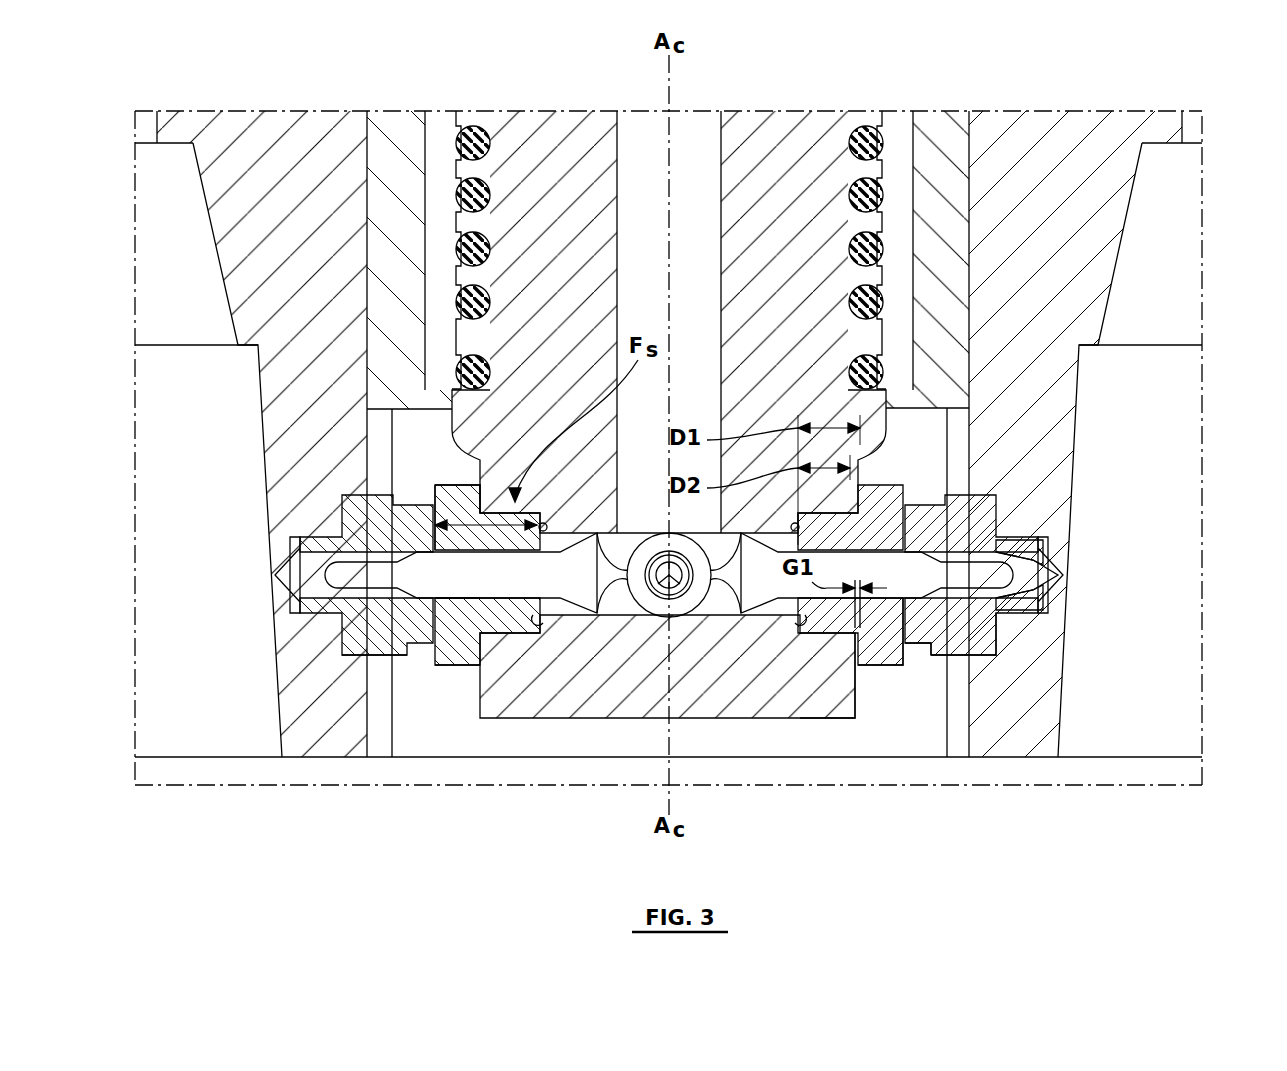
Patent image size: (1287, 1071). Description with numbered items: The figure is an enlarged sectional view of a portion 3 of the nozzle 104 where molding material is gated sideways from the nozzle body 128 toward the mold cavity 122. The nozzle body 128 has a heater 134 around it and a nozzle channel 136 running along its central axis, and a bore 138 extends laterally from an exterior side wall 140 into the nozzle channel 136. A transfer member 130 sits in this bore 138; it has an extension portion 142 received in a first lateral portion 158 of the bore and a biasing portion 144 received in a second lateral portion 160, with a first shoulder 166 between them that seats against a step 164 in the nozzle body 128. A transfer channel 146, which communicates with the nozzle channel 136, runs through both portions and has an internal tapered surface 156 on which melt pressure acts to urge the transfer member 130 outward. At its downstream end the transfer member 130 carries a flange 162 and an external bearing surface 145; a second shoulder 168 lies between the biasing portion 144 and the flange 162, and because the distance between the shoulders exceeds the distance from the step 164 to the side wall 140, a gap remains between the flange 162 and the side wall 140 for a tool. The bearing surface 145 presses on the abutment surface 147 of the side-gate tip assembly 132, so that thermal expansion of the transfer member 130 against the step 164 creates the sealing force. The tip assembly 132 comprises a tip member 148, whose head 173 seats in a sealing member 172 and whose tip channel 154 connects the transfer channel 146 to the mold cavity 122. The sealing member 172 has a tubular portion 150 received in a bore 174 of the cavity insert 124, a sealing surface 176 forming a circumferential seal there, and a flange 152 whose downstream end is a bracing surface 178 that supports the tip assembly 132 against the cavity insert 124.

The portion 3 is at (832, 111).
The nozzle 104 is at (1000, 164).
The mold cavity 122 is at (210, 597).
The cavity insert 124 is at (312, 718).
The nozzle body 128 is at (747, 698).
The transfer member 130 is at (505, 513).
The side-gate tip assembly 132 is at (1016, 481).
The heater 134 is at (878, 197).
The nozzle channel 136 is at (692, 157).
The bore 138 is at (716, 795).
The exterior side wall 140 is at (452, 391).
The extension portion 142 is at (597, 615).
The biasing portion 144 is at (483, 612).
The external bearing surface 145 is at (978, 492).
The transfer channel 146 is at (522, 633).
The abutment surface 147 is at (352, 650).
The tip member 148 is at (1058, 576).
The tubular portion 150 is at (1012, 610).
The flange 152 is at (945, 633).
The tip channel 154 is at (1005, 615).
The internal tapered surface 156 is at (657, 617).
The first lateral portion 158 is at (802, 623).
The second lateral portion 160 is at (857, 698).
The flange 162 is at (900, 605).
The step 164 is at (540, 615).
The first shoulder 166 is at (797, 525).
The second shoulder 168 is at (480, 512).
The sealing member 172 is at (305, 625).
The tip member head 173 is at (352, 520).
The bore 174 is at (322, 560).
The sealing surface 176 is at (312, 611).
The bracing surface 178 is at (1003, 508).